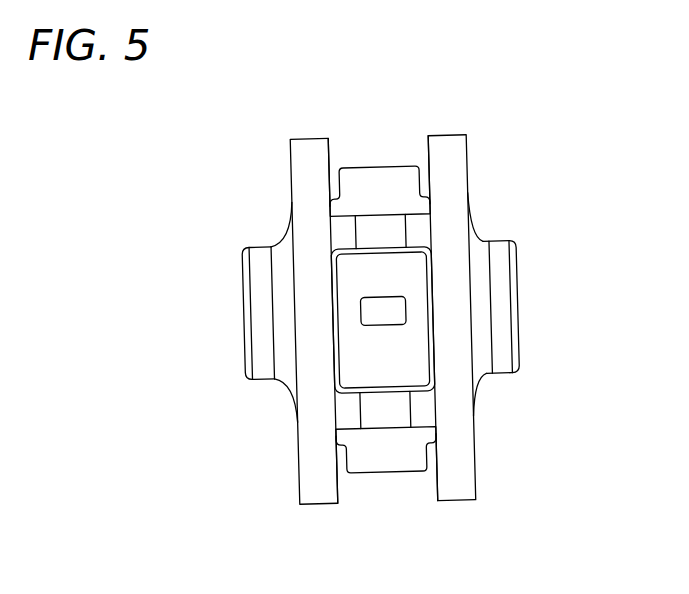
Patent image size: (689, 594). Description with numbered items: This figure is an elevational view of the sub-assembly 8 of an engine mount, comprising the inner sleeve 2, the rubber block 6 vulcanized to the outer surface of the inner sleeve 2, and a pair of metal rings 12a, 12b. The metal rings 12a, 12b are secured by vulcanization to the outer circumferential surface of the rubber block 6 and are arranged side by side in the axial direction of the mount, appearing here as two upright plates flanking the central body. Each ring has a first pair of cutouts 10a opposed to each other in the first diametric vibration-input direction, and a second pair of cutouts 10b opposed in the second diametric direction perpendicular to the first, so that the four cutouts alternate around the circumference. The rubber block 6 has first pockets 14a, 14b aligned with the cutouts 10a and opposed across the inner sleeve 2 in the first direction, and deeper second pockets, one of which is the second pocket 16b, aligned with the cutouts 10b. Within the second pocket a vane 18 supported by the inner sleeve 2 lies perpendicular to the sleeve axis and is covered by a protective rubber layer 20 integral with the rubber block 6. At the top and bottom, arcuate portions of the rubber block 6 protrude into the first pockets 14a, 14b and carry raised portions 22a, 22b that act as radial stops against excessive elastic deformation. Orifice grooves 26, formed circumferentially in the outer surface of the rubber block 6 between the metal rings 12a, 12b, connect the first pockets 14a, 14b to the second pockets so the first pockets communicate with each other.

The inner sleeve 2 is at (505, 329).
The rubber block 6 is at (480, 247).
The sub-assembly 8 is at (250, 199).
The first pair of cutouts 10a is at (430, 152).
The second pair of cutouts 10b is at (431, 352).
The metal ring 12a is at (309, 452).
The metal ring 12b is at (470, 456).
The first pocket 14a is at (329, 158).
The first pocket 14b is at (339, 487).
The second pocket 16b is at (337, 301).
The vane 18 is at (421, 305).
The protective rubber layer 20 is at (384, 322).
The raised portion 22a is at (362, 172).
The raised portion 22b is at (367, 470).
The orifice groove 26 is at (407, 230).